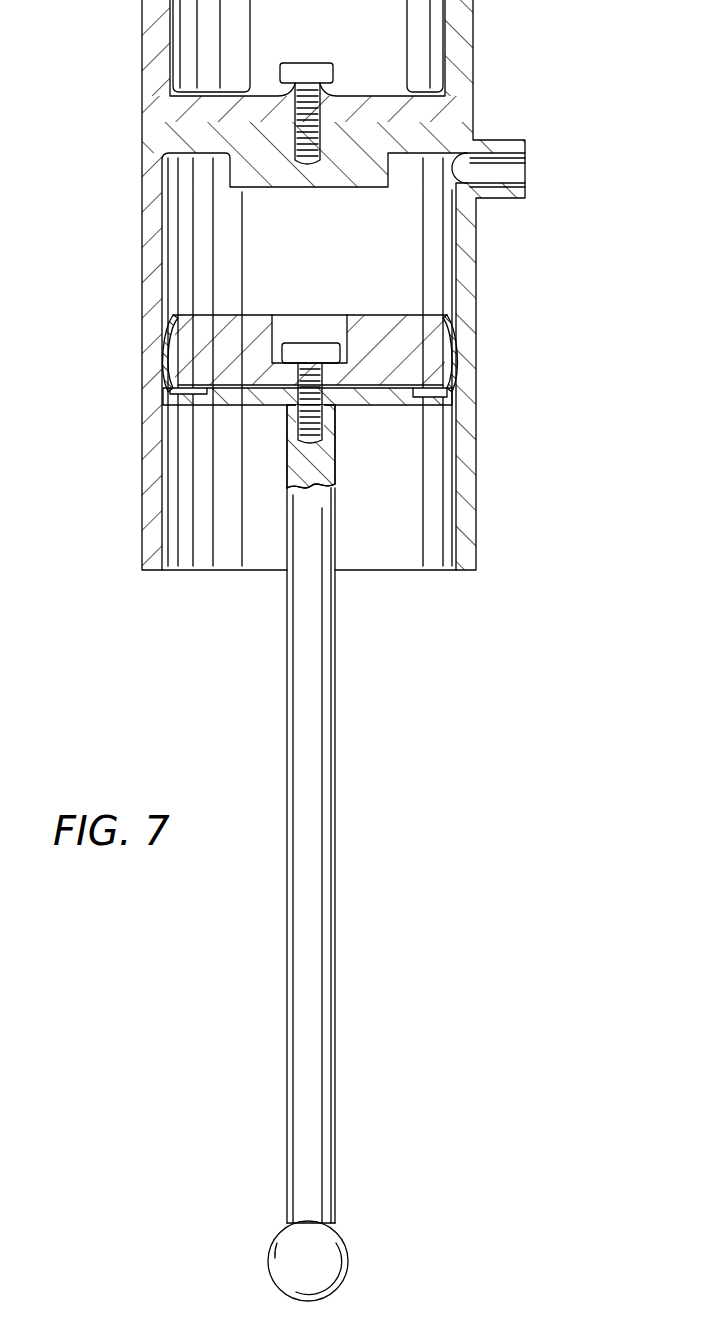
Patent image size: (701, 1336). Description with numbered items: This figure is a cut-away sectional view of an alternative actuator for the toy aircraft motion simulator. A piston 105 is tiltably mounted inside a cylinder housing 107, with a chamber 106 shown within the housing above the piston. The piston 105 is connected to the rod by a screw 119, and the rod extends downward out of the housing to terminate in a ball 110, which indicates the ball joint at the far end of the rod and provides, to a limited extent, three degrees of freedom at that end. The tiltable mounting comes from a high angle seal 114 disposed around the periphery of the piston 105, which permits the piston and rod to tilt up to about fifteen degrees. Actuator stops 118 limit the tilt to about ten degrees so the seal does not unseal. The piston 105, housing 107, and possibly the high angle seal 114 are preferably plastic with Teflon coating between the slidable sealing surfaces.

The piston 105 is at (168, 345).
The chamber 106 is at (342, 249).
The cylinder housing 107 is at (477, 467).
The ball 110 is at (342, 1238).
The high angle seal 114 is at (452, 343).
The actuator stop 118 is at (336, 187).
The screw 119 is at (316, 345).